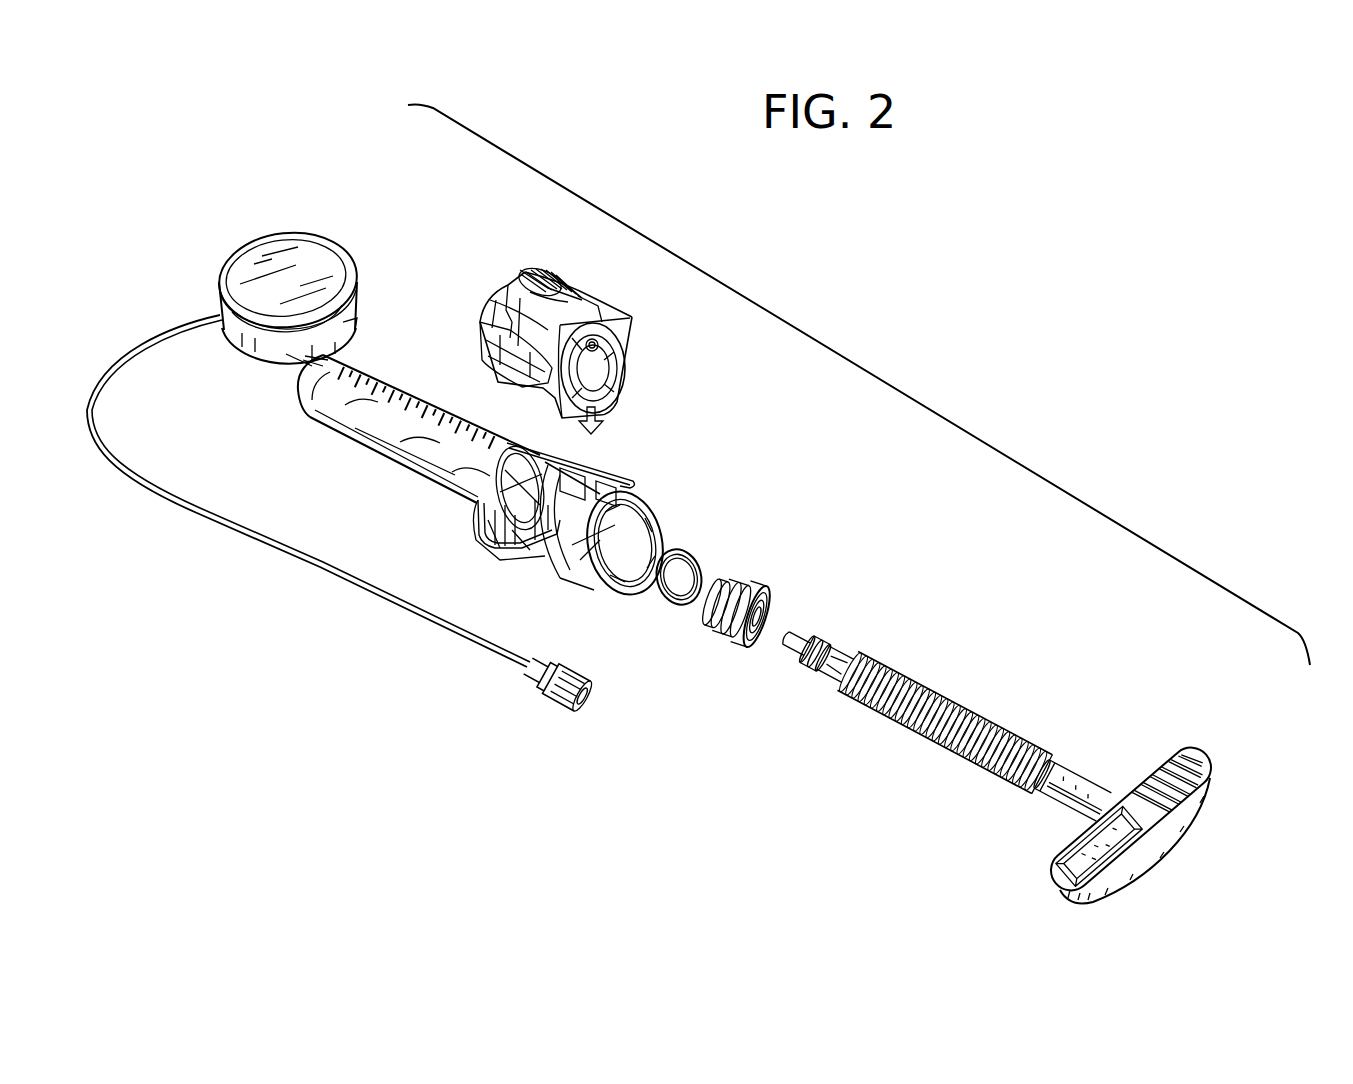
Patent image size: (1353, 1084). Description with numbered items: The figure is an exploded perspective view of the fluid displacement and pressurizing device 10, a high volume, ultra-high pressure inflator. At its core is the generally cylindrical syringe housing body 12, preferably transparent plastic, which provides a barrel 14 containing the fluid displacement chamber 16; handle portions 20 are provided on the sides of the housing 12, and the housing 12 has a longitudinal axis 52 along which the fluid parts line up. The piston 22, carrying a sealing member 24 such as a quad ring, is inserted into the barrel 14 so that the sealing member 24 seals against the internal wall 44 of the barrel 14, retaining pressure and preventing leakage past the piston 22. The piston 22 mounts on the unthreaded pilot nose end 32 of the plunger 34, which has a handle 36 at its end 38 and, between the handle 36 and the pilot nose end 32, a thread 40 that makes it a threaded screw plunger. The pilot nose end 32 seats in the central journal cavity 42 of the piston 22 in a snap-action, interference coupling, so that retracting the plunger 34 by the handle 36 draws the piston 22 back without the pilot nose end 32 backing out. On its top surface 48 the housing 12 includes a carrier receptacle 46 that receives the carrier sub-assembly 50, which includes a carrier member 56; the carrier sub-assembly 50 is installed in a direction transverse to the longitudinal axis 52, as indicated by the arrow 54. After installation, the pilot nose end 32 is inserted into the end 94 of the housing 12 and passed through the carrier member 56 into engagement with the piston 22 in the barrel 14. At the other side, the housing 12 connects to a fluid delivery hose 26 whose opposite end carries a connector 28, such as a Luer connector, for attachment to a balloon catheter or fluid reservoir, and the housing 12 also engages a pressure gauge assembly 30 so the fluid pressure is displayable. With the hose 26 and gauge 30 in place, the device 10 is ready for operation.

The device 10 is at (878, 376).
The syringe housing body 12 is at (419, 440).
The barrel 14 is at (385, 445).
The fluid displacement chamber 16 is at (551, 518).
The handle portions 20 is at (607, 470).
The piston 22 is at (756, 623).
The sealing member 24 is at (702, 541).
The fluid delivery hose 26 is at (400, 600).
The connector 28 is at (553, 720).
The pressure gauge assembly 30 is at (325, 262).
The unthreaded pilot nose end 32 is at (816, 654).
The plunger 34 is at (1011, 743).
The handle 36 is at (1185, 776).
The end 38 is at (1145, 808).
The thread 40 is at (1071, 789).
The central journal cavity 42 is at (758, 632).
The internal wall 44 is at (506, 528).
The carrier receptacle 46 is at (566, 486).
The top surface 48 is at (516, 450).
The carrier sub-assembly 50 is at (596, 283).
The longitudinal axis 52 is at (678, 548).
The arrow 54 is at (586, 416).
The carrier member 56 is at (545, 402).
The end 94 is at (622, 588).